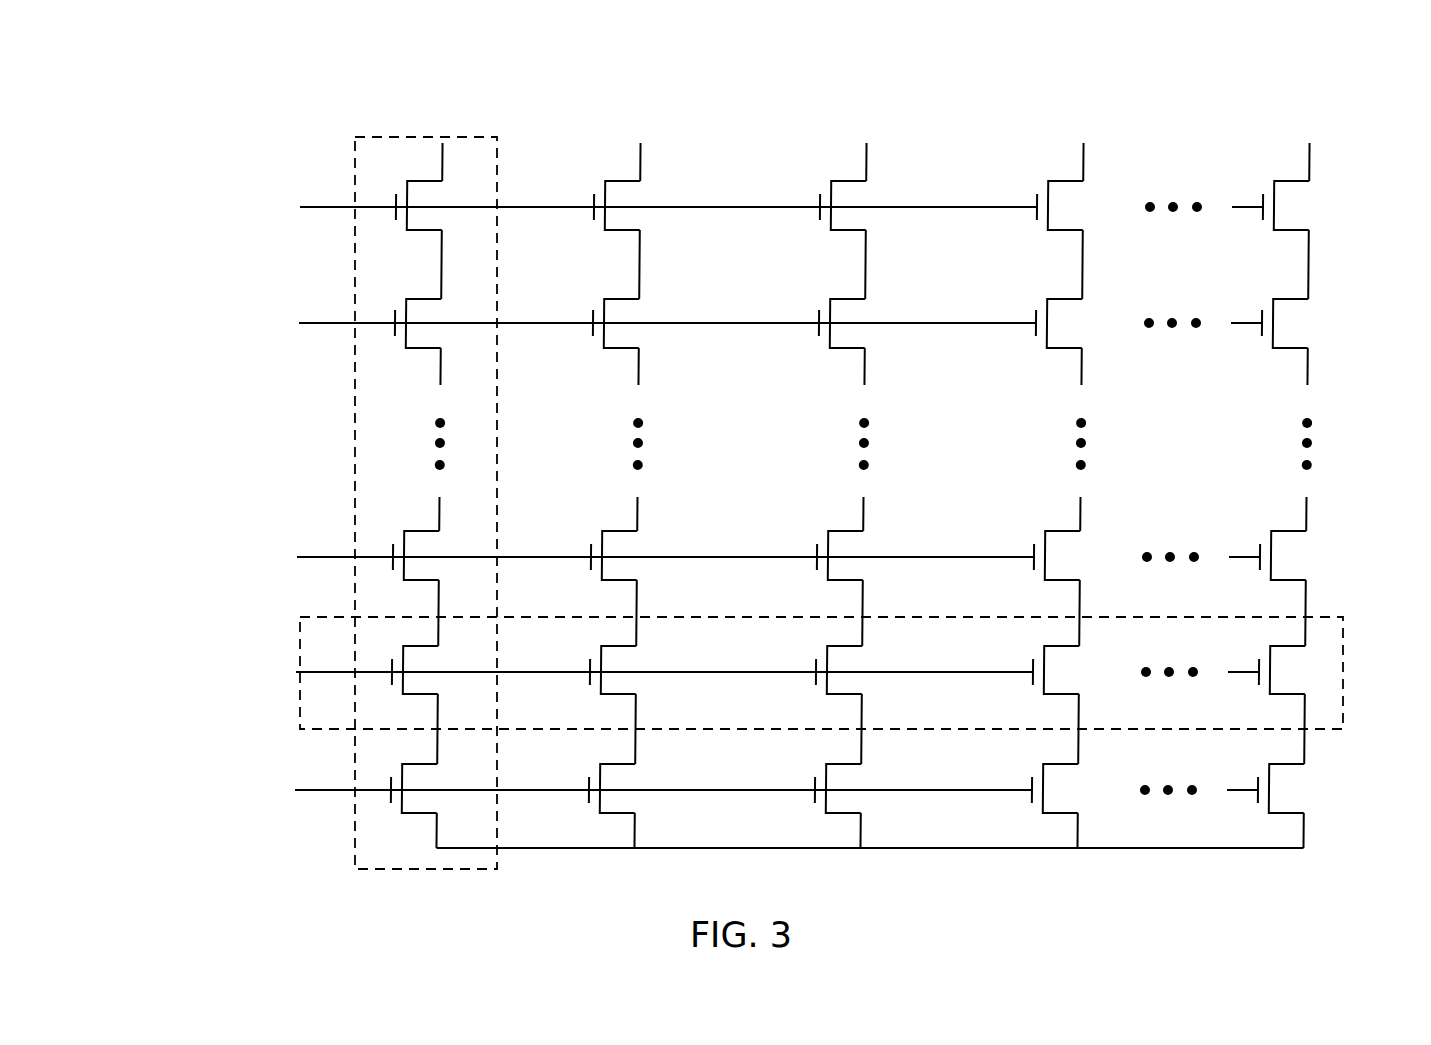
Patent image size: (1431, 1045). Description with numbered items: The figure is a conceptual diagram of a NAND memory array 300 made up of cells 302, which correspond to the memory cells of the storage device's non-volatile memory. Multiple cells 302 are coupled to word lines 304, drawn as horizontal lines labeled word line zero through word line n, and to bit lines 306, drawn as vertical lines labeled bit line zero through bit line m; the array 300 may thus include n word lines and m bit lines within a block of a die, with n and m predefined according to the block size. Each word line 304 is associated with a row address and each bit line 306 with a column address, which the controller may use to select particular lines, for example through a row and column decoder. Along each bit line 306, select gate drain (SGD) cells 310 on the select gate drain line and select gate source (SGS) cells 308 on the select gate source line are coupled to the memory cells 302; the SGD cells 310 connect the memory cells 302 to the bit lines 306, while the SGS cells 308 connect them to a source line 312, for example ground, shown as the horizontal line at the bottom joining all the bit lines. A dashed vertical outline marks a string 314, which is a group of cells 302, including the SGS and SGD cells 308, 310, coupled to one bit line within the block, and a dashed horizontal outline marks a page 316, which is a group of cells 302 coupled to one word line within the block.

The NAND memory array 300 is at (121, 99).
The cells 302 is at (422, 300).
The word lines 304 is at (195, 303).
The bit lines 306 is at (857, 85).
The select gate source (SGS) cells 308 is at (185, 773).
The select gate drain (SGD) cells 310 is at (183, 192).
The source line 312 is at (973, 849).
The string 314 is at (355, 137).
The page 316 is at (1345, 617).